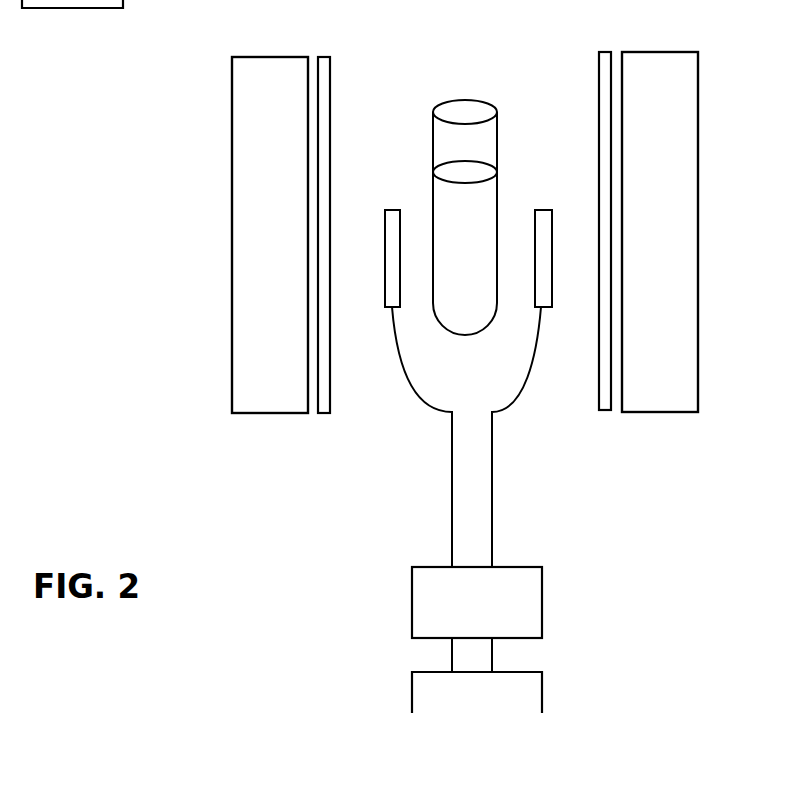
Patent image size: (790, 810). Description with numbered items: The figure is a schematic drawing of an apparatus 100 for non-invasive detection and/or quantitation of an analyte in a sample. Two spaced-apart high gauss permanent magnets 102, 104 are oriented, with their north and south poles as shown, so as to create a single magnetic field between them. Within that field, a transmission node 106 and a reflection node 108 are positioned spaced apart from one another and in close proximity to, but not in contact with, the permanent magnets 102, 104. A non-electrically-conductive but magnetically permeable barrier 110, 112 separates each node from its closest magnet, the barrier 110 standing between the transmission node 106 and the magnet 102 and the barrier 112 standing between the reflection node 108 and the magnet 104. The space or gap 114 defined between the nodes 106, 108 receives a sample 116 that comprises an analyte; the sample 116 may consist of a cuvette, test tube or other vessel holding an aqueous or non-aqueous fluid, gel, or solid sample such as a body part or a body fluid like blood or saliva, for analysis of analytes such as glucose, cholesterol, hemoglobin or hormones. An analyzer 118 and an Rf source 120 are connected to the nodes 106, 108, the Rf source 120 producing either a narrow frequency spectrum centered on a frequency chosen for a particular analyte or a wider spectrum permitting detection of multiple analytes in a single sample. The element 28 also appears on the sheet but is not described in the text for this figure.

The controller 28 is at (78, 8).
The apparatus 100 is at (317, 581).
The high gauss permanent magnet 102 is at (273, 413).
The high gauss permanent magnet 104 is at (662, 412).
The transmission node 106 is at (393, 210).
The reflection node 108 is at (541, 210).
The non-electrically-conductive magnetically permeable barrier 110 is at (328, 57).
The non-electrically-conductive magnetically permeable barrier 112 is at (602, 52).
The gap 114 is at (393, 83).
The sample 116 is at (463, 100).
The analyzer 118 is at (542, 598).
The Rf source 120 is at (542, 710).